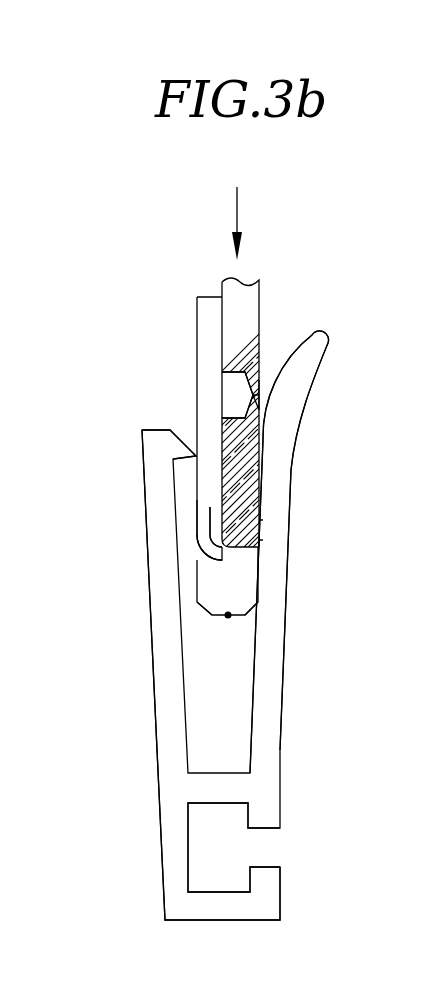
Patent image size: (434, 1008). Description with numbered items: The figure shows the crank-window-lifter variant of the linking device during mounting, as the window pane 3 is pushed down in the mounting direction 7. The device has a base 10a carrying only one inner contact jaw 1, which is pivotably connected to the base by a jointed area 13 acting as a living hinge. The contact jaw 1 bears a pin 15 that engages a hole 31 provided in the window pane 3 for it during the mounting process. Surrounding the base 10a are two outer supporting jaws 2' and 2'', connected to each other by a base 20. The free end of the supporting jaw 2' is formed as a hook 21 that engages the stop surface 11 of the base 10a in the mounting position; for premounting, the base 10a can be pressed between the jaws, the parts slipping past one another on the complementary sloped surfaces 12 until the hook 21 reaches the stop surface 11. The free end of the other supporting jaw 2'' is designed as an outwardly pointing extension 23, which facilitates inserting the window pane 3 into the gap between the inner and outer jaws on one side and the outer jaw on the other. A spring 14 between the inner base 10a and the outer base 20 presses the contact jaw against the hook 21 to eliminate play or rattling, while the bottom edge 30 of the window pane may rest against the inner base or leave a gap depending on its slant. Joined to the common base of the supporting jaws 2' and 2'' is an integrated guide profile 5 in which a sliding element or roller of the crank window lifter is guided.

The inner contact jaw 1 is at (210, 330).
The window pane 3 is at (255, 322).
The mounting direction 7 is at (237, 212).
The pin 15 is at (238, 392).
The outwardly pointing extension 23 is at (323, 347).
The hole 31 is at (255, 412).
The hook 21 is at (170, 442).
The outer supporting jaw 2' is at (180, 625).
The outer supporting jaw 2'' is at (303, 606).
The jointed area 13 is at (180, 536).
The stop surface 11 is at (193, 552).
The sloped surface 12 is at (190, 618).
The spring 14 is at (247, 638).
The base 10a is at (247, 575).
The bottom edge of the window pane 30 is at (252, 530).
The base 20 is at (228, 790).
The guide profile 5 is at (175, 850).